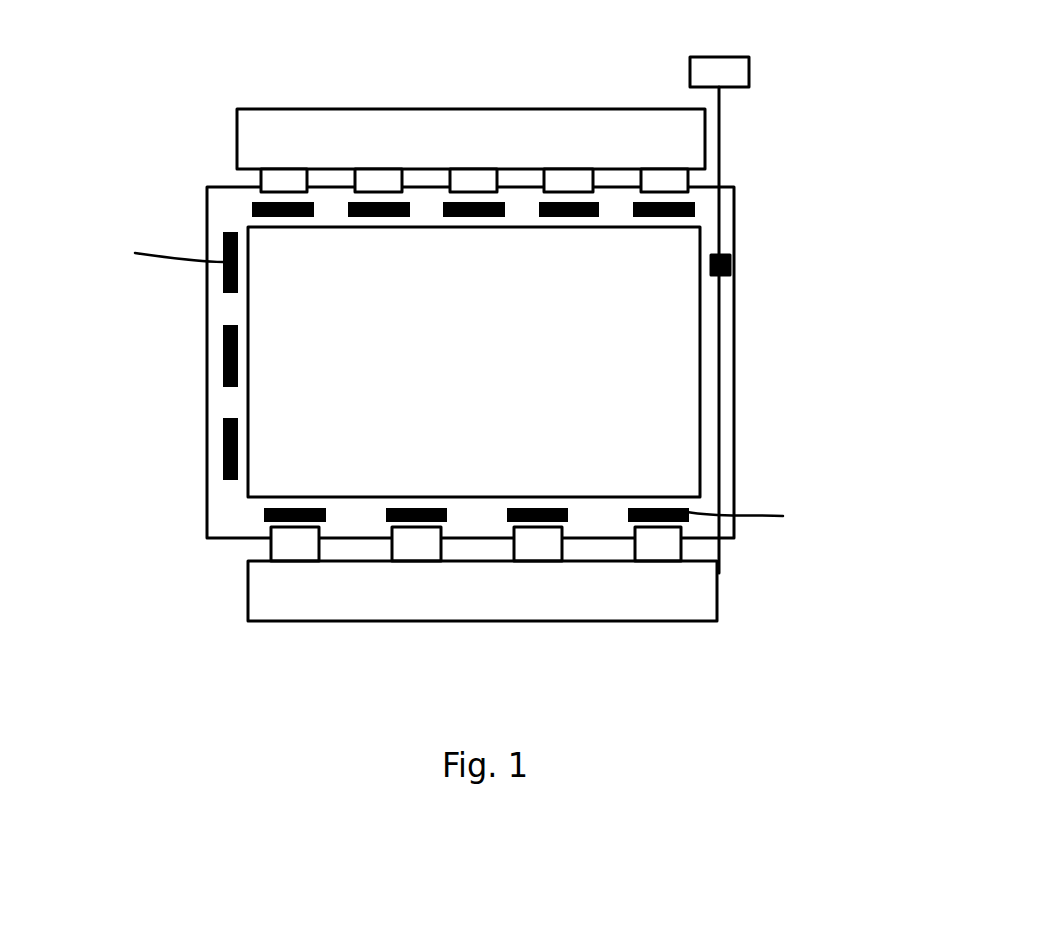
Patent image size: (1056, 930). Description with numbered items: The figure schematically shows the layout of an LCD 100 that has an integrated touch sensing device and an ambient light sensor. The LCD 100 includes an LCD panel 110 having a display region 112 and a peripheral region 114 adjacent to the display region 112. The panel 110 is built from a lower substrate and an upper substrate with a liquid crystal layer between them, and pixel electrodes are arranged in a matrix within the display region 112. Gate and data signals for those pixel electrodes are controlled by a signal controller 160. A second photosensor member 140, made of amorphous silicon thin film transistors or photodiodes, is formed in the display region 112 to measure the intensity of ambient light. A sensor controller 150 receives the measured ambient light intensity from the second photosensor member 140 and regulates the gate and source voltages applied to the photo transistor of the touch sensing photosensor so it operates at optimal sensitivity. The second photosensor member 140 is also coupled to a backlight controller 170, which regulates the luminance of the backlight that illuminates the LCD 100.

The LCD 100 is at (492, 26).
The LCD panel 110 is at (197, 335).
The display region 112 is at (293, 405).
The peripheral region 114 is at (713, 393).
The second photosensor member 140 is at (730, 262).
The sensor controller 150 is at (680, 595).
The signal controller 160 is at (690, 145).
The backlight controller 170 is at (749, 69).